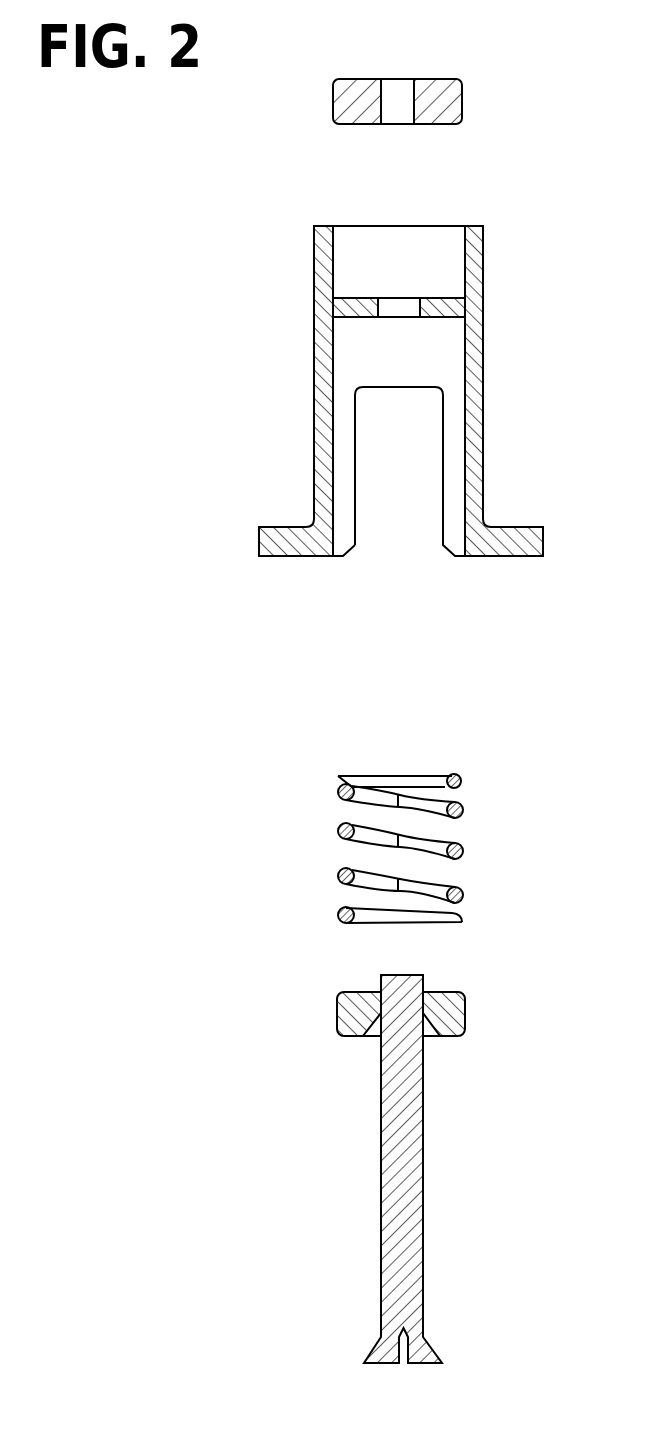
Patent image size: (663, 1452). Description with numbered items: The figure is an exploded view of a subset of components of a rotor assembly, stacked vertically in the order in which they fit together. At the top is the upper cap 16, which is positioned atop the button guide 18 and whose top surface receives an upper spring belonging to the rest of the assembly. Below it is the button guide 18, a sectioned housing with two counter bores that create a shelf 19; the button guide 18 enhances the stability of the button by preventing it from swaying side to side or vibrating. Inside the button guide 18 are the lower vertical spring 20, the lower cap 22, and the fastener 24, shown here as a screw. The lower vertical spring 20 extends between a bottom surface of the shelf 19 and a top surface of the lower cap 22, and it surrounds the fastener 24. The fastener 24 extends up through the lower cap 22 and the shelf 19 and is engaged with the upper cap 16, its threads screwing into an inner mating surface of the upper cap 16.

The upper cap 16 is at (457, 104).
The button guide 18 is at (483, 421).
The shelf 19 is at (483, 307).
The lower vertical spring 20 is at (459, 811).
The lower cap 22 is at (465, 1013).
The fastener 24 is at (423, 1187).